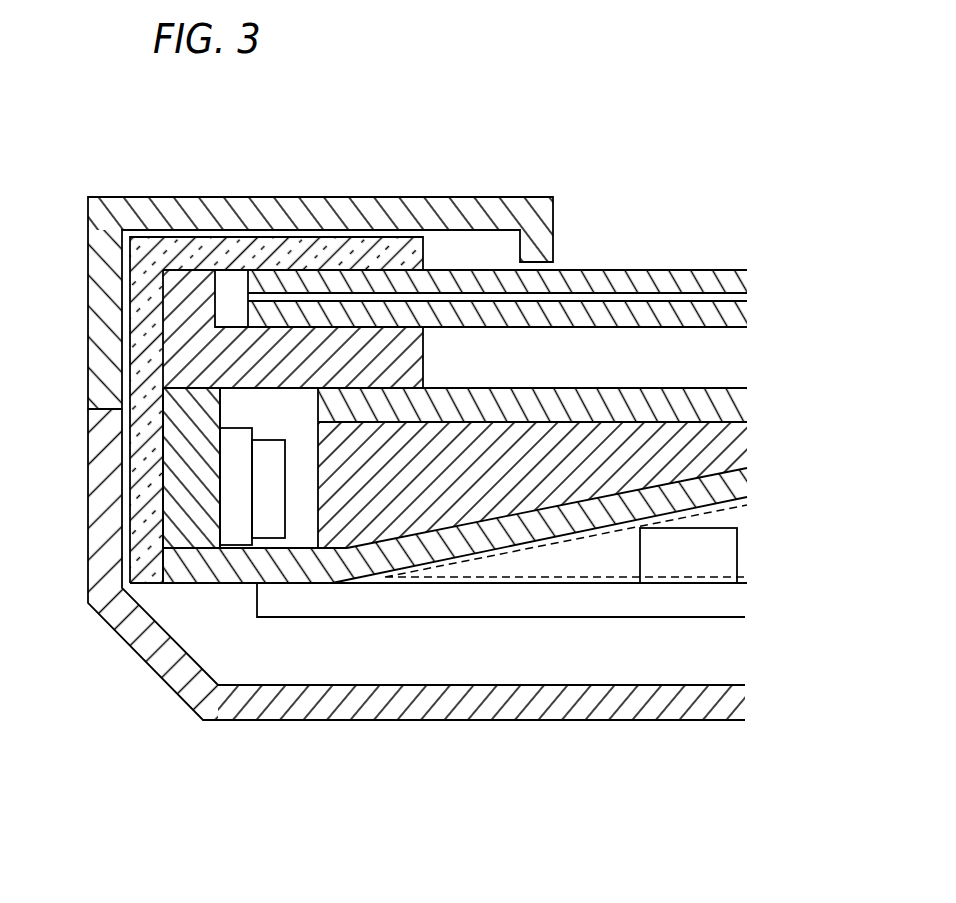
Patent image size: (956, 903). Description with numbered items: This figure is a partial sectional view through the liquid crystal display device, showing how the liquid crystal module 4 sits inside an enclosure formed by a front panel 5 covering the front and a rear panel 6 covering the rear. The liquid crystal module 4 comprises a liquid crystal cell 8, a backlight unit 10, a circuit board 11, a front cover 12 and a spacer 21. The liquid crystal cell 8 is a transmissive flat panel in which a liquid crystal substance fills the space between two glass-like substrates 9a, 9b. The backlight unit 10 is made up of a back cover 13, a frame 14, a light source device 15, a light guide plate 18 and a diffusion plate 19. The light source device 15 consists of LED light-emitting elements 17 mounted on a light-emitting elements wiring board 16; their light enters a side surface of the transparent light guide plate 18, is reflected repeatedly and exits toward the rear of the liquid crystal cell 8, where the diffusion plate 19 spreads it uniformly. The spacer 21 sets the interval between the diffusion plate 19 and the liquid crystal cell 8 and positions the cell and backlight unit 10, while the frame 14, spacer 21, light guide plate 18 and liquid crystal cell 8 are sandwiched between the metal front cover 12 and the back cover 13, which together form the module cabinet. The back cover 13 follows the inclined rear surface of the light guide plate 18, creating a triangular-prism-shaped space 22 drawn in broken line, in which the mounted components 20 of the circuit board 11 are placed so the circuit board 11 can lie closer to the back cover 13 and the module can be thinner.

The liquid crystal module 4 is at (444, 451).
The front panel 5 is at (293, 197).
The rear panel 6 is at (350, 720).
The liquid crystal cell 8 is at (503, 298).
The substrate 9a is at (722, 270).
The substrate 9b is at (728, 327).
The backlight unit 10 is at (762, 390).
The circuit board 11 is at (495, 617).
The front cover 12 is at (188, 237).
The back cover 13 is at (370, 583).
The frame 14 is at (163, 493).
The light source device 15 is at (217, 490).
The light-emitting elements wiring board 16 is at (232, 583).
The light-emitting element 17 is at (267, 583).
The light guide plate 18 is at (318, 492).
The diffusion plate 19 is at (520, 388).
The mounted components 20 is at (640, 553).
The spacer 21 is at (423, 345).
The triangular-prism-shaped space 22 is at (597, 555).